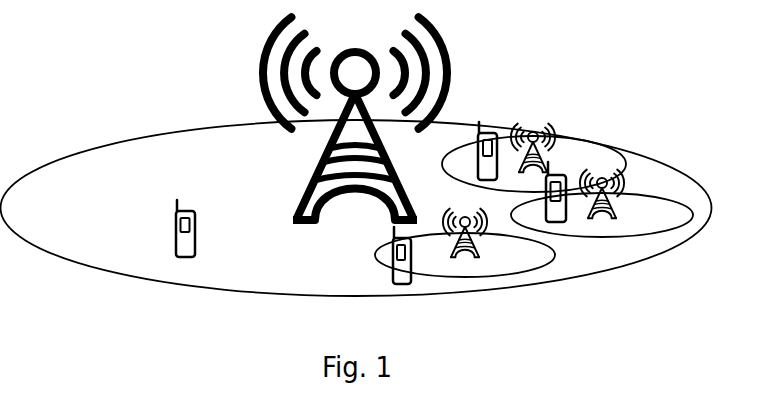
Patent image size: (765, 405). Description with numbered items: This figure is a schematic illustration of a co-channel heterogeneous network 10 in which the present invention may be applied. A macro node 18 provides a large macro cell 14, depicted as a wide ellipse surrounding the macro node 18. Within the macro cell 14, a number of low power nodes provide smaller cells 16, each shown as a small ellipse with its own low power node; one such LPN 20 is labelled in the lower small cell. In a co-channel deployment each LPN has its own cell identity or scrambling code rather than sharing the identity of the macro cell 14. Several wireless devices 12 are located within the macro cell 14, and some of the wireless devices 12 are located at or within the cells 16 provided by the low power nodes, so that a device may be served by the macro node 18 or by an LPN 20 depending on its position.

The co-channel heterogeneous network 10 is at (139, 114).
The wireless device 12 is at (193, 258).
The macro cell 14 is at (115, 272).
The cells 16 is at (553, 255).
The macro node 18 is at (313, 223).
The LPN 20 is at (472, 250).